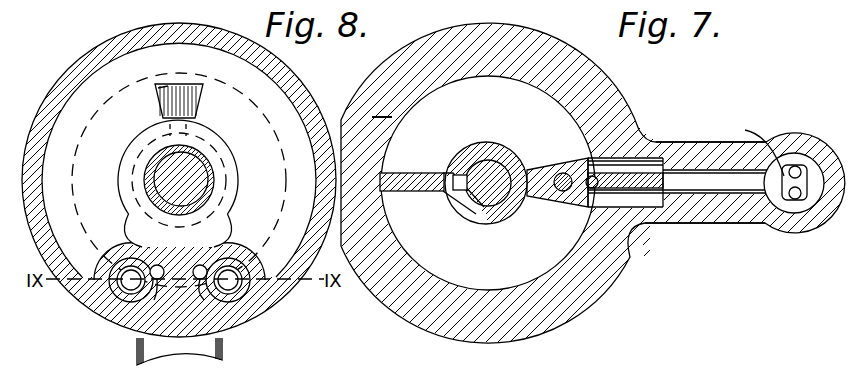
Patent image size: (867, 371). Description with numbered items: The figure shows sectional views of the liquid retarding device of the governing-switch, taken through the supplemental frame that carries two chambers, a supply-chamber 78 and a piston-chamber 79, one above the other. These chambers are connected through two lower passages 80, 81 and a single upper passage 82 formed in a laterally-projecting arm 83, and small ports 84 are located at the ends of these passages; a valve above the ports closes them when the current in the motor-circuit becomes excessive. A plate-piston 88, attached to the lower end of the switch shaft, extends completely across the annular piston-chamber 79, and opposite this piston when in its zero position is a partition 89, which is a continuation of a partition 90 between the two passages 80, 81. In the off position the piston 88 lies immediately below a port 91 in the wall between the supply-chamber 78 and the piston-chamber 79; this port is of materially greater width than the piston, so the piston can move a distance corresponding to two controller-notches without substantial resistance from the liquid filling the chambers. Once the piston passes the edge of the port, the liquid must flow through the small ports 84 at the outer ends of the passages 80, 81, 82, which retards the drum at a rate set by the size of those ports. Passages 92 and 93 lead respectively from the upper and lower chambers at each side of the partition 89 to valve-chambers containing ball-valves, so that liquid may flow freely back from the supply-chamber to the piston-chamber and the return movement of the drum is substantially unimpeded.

In FIG. 8, the supply-chamber 78 is at (195, 183).
In FIG. 7, the piston-chamber 79 is at (593, 183).
In FIG. 7, the lower passage 80 is at (625, 182).
In FIG. 7, the lower passage 81 is at (625, 200).
In FIG. 7, the upper passage 82 is at (715, 182).
In FIG. 7, the laterally-projecting arm 83 is at (705, 197).
In FIG. 7, the ports 84 is at (796, 167).
In FIG. 8, the plate-piston 88 is at (182, 106).
In FIG. 7, the plate-piston 88 is at (414, 175).
In FIG. 7, the partition 89 is at (546, 173).
In FIG. 7, the partition 90 is at (649, 182).
In FIG. 8, the port 91 is at (158, 91).
In FIG. 8, the passage 92 is at (126, 241).
In FIG. 8, the passage 93 is at (132, 325).